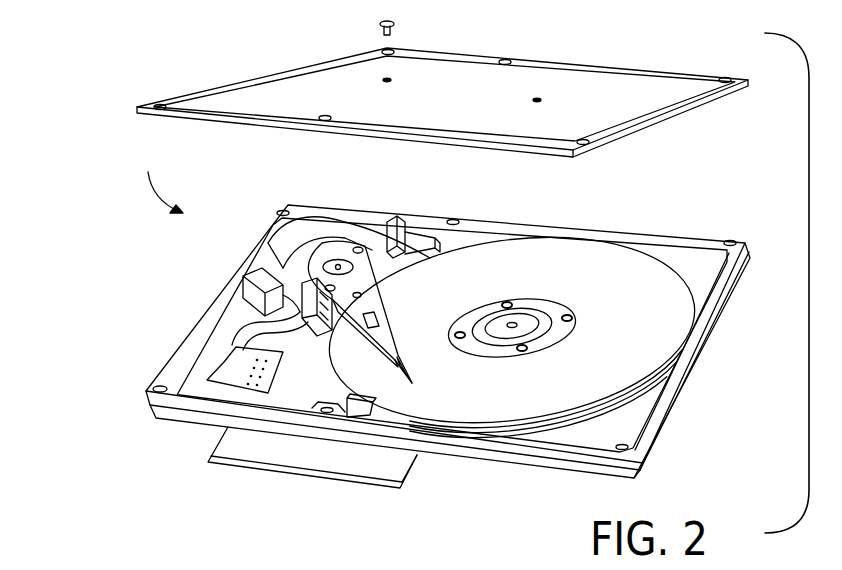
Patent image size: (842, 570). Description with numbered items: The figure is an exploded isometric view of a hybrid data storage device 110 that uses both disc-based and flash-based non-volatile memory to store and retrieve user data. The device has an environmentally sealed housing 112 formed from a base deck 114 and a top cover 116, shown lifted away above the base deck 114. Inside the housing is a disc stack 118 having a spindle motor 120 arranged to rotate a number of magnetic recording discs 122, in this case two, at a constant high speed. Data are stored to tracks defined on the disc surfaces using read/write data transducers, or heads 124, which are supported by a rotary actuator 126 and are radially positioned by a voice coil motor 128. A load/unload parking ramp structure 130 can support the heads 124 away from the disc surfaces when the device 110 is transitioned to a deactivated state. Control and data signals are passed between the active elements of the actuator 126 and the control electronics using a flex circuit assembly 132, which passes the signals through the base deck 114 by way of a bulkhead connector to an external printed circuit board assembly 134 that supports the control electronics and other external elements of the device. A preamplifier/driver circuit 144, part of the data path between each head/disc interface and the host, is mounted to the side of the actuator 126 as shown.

The data storage device 110 is at (118, 73).
The housing 112 is at (155, 180).
The base deck 114 is at (685, 380).
The top cover 116 is at (538, 76).
The disc stack 118 is at (545, 251).
The spindle motor 120 is at (523, 320).
The magnetic recording discs 122 is at (572, 430).
The read/write data transducers 124 is at (413, 385).
The rotary actuator 126 is at (393, 325).
The voice coil motor 128 is at (330, 212).
The load/unload parking ramp structure 130 is at (360, 408).
The flex circuit assembly 132 is at (247, 327).
The printed circuit board assembly 134 is at (257, 458).
The preamplifier/driver circuit 144 is at (297, 275).